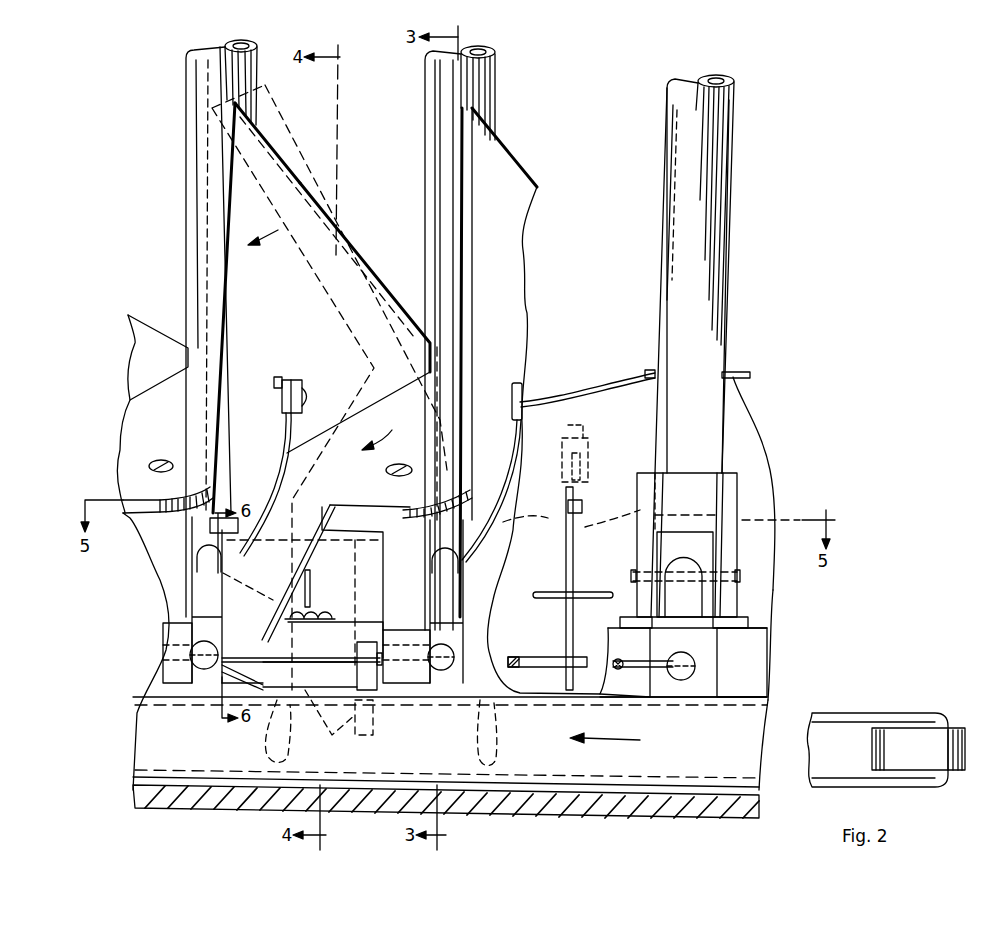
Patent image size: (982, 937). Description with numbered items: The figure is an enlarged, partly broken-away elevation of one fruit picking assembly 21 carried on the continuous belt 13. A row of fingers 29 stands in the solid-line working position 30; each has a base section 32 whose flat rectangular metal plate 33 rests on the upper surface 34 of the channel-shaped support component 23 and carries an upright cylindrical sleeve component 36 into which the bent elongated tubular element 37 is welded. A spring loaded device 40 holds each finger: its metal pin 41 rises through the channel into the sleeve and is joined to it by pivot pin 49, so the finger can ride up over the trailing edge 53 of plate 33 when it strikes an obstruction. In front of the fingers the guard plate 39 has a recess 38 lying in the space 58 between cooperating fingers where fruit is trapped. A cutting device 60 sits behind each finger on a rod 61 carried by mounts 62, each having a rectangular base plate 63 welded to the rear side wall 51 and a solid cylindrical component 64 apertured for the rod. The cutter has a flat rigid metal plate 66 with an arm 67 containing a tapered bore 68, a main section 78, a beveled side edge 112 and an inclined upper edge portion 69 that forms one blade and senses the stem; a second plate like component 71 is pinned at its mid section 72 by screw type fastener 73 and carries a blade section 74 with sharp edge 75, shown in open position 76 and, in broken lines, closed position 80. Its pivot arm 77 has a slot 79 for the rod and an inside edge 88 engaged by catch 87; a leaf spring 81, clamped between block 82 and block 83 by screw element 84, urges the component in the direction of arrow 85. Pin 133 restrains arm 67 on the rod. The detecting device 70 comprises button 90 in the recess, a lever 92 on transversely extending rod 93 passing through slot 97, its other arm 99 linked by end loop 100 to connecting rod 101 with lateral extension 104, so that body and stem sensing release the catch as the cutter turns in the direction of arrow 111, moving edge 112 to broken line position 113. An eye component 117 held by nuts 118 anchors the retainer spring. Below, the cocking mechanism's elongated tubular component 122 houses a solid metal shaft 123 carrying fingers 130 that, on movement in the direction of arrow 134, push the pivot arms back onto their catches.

The continuous belt 13 is at (698, 821).
The fruit picking assembly 21 is at (733, 132).
The support component 23 is at (772, 630).
The fingers 29 is at (189, 63).
The working position 30 is at (734, 188).
The base section 32 is at (737, 521).
The flat rectangular metal plate 33 is at (737, 618).
The upper surface 34 is at (748, 624).
The upright cylindrical sleeve component 36 is at (737, 481).
The elongated tubular element 37 is at (663, 165).
The recess 38 is at (571, 402).
The guard plate 39 is at (740, 372).
The spring loaded device 40 is at (658, 628).
The metal pin 41 is at (197, 548).
The pivot pin 49 is at (631, 575).
The rear side wall 51 is at (774, 658).
The trailing edge 53 is at (732, 634).
The space between fingers 58 is at (362, 226).
The cutting device 60 is at (268, 138).
The rod 61 is at (312, 653).
The mount 62 is at (445, 619).
The rectangular base plate 63 is at (646, 658).
The solid cylindrical component 64 is at (215, 641).
The flat rigid metal plate 66 is at (373, 265).
The arm 67 is at (379, 588).
The tapered bore 68 is at (392, 648).
The upper edge portion 69 is at (306, 178).
The detecting device 70 is at (566, 552).
The plate like component 71 is at (402, 385).
The mid section 72 is at (372, 410).
The screw type fastener 73 is at (176, 460).
The blade section 74 is at (232, 196).
The sharp edge 75 is at (430, 97).
The open position 76 is at (470, 146).
The pivot arm 77 is at (220, 605).
The main section 78 is at (176, 432).
The slot 79 is at (294, 598).
The closed position 80 is at (302, 146).
The leaf spring 81 is at (279, 440).
The block 82 is at (278, 388).
The block 83 is at (305, 380).
The screw element 84 is at (306, 391).
The arrow 85 is at (378, 428).
The catch 87 is at (272, 663).
The inside edge 88 is at (272, 690).
The button 90 is at (567, 426).
The lever 92 is at (580, 540).
The transversely extending rod 93 is at (558, 590).
The slot 97 is at (567, 511).
The other arm 99 is at (562, 645).
The end loop 100 is at (580, 660).
The connecting rod 101 is at (519, 657).
The lateral extension 104 is at (522, 668).
The arrow 111 is at (268, 236).
The side edge 112 is at (208, 521).
The broken line position 113 is at (211, 316).
The eye component 117 is at (308, 571).
The nuts 118 is at (321, 603).
The elongated tubular component 122 is at (722, 697).
The solid metal shaft 123 is at (857, 713).
The fingers 130 is at (357, 688).
The pin 133 is at (376, 652).
The arrow 134 is at (637, 741).